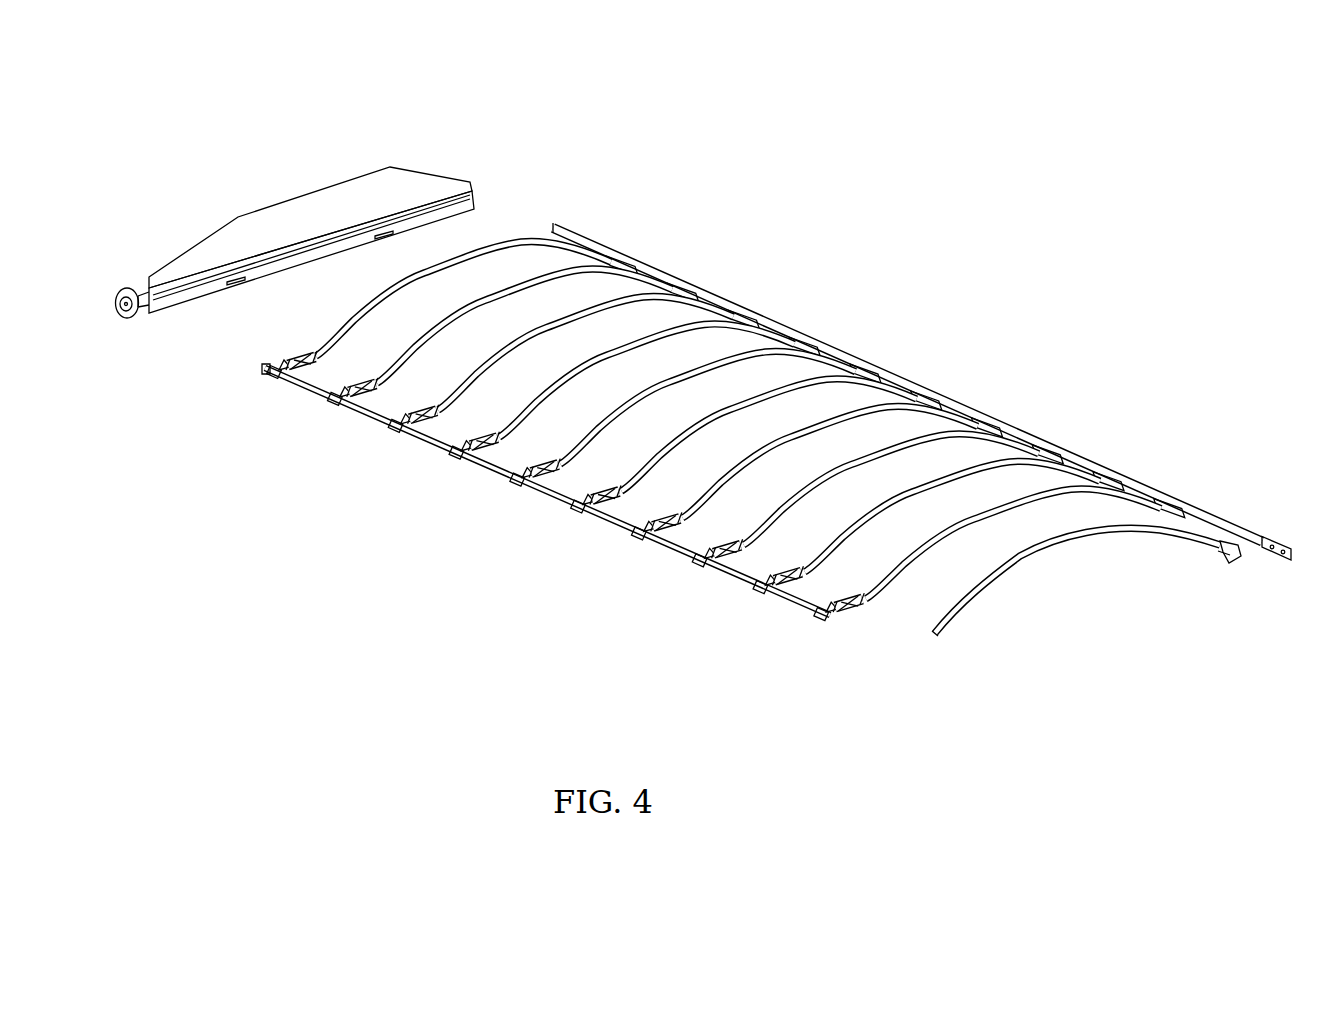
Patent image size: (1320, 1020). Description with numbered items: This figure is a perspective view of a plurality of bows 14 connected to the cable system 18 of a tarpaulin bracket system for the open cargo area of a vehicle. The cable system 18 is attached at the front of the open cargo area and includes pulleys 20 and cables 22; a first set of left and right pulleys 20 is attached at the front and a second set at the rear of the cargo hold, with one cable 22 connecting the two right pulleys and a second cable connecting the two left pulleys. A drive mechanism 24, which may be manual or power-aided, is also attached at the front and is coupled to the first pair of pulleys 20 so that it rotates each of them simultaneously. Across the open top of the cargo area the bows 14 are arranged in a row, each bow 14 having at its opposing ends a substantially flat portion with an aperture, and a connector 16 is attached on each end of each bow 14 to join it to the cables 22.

The bow 14 is at (1065, 490).
The connector 16 is at (845, 618).
The cable system 18 is at (398, 130).
The pulley 20 is at (122, 318).
The cable 22 is at (430, 442).
The drive mechanism 24 is at (163, 222).